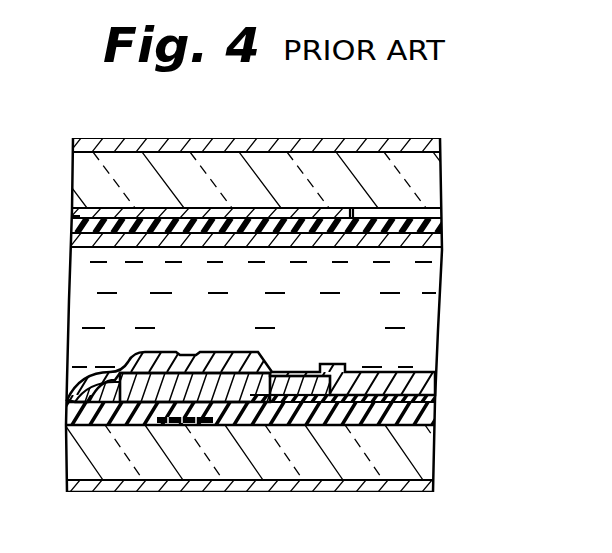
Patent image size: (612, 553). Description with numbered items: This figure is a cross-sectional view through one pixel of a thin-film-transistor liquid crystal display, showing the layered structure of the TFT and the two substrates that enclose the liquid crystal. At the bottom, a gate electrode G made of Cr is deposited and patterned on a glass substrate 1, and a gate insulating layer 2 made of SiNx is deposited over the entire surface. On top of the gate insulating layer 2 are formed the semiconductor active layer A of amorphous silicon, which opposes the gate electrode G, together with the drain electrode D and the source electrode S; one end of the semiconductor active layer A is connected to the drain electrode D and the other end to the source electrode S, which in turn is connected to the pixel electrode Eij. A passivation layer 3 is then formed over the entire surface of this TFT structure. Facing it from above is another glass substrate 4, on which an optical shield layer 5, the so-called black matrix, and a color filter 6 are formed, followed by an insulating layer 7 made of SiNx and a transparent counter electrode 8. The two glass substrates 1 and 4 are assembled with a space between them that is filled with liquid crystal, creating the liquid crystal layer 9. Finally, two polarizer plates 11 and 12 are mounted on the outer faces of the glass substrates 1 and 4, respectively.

The glass substrate 1 is at (434, 450).
The gate insulating layer 2 is at (434, 409).
The passivation layer 3 is at (434, 378).
The glass substrate 4 is at (442, 174).
The optical shield layer 5 is at (72, 216).
The color filter 6 is at (443, 213).
The insulating layer 7 is at (443, 227).
The transparent counter electrode 8 is at (442, 243).
The liquid crystal layer 9 is at (438, 308).
The polarizer plate 11 is at (434, 487).
The polarizer plate 12 is at (441, 142).
The pixel electrode Eij is at (434, 397).
The gate electrode G is at (172, 425).
The source electrode S is at (288, 394).
The drain electrode D is at (68, 398).
The semiconductor active layer A is at (177, 352).